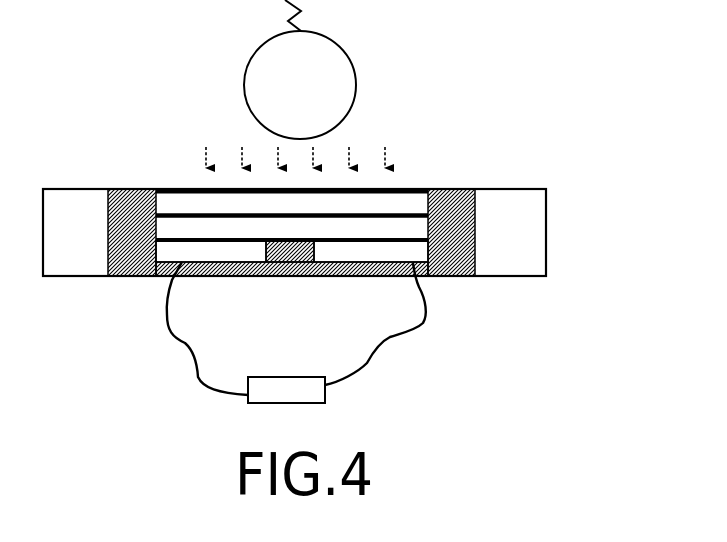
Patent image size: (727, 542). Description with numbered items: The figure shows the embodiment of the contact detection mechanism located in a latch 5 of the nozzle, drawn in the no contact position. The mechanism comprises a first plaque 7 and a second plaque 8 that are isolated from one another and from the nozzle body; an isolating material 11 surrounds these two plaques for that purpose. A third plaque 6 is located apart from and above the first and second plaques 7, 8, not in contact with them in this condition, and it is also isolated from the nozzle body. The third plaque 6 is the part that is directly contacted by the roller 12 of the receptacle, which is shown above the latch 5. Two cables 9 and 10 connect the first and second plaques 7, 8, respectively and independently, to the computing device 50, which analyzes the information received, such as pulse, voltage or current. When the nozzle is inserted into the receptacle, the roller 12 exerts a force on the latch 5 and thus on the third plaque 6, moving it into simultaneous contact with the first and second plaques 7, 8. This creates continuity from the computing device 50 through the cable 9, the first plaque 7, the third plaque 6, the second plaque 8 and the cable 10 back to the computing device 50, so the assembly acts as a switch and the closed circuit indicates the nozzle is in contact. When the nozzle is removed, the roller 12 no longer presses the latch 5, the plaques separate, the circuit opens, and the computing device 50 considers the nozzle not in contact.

The latch 5 is at (77, 198).
The third plaque 6 is at (411, 197).
The first plaque 7 is at (182, 252).
The second plaque 8 is at (397, 252).
The cable 9 is at (197, 381).
The cable 10 is at (378, 348).
The isolating material 11 is at (148, 198).
The roller 12 is at (340, 63).
The computing device 50 is at (265, 377).